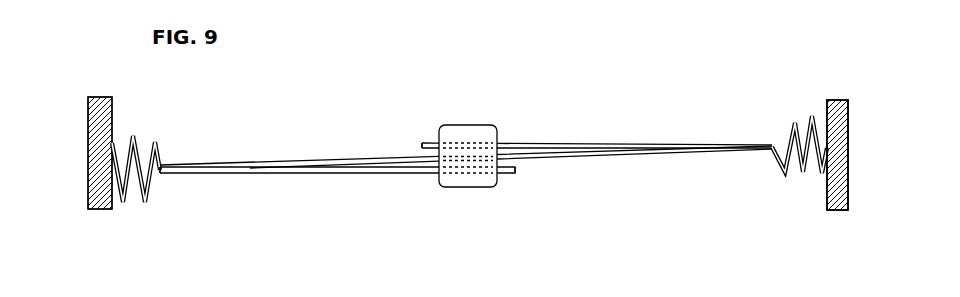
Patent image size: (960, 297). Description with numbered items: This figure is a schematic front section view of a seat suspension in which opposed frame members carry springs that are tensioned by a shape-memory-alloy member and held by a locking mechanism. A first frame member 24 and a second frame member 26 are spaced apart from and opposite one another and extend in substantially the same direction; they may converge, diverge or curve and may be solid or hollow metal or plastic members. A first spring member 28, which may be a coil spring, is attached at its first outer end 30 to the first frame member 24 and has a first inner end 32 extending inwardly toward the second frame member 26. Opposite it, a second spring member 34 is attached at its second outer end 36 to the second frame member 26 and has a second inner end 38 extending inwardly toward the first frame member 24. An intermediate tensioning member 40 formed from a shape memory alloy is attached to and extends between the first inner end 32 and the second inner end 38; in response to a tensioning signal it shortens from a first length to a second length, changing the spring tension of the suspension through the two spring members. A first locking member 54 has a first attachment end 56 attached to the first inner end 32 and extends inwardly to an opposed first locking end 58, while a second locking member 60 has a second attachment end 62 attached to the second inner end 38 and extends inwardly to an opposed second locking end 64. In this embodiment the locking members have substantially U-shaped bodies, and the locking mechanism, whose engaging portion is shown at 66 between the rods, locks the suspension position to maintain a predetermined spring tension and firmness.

The first frame member 24 is at (97, 177).
The second frame member 26 is at (838, 163).
The first spring member 28 is at (134, 136).
The first outer end 30 is at (110, 168).
The first inner end 32 is at (158, 146).
The second spring member 34 is at (794, 109).
The second outer end 36 is at (820, 127).
The second inner end 38 is at (782, 141).
The intermediate tensioning member 40 is at (351, 156).
The first locking member 54 is at (251, 178).
The first attachment end 56 is at (173, 174).
The first locking end 58 is at (516, 170).
The second locking member 60 is at (633, 139).
The second attachment end 62 is at (766, 152).
The second locking end 64 is at (421, 146).
The coupler 66 is at (466, 122).